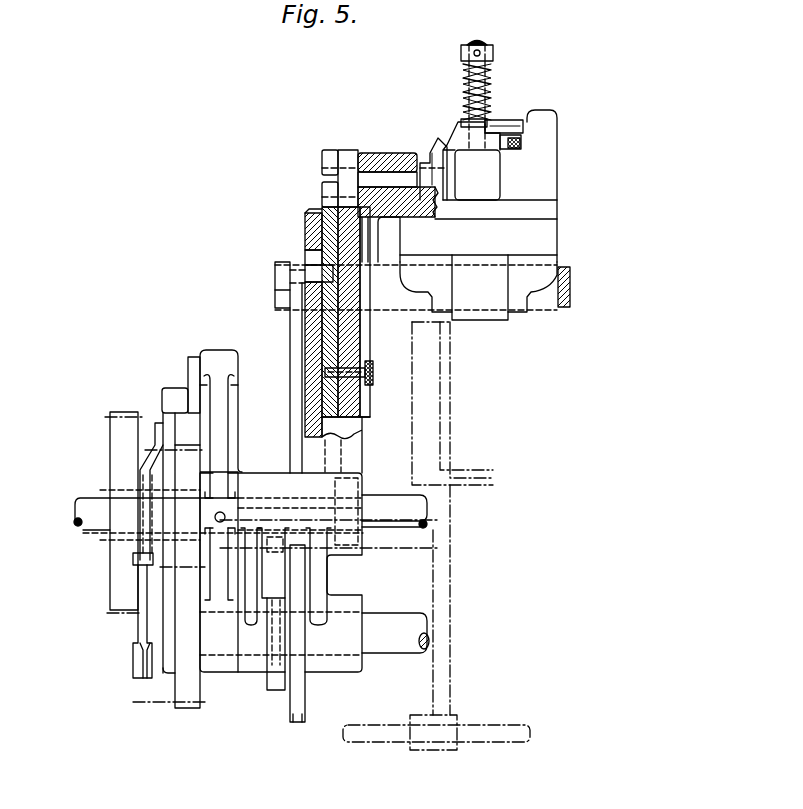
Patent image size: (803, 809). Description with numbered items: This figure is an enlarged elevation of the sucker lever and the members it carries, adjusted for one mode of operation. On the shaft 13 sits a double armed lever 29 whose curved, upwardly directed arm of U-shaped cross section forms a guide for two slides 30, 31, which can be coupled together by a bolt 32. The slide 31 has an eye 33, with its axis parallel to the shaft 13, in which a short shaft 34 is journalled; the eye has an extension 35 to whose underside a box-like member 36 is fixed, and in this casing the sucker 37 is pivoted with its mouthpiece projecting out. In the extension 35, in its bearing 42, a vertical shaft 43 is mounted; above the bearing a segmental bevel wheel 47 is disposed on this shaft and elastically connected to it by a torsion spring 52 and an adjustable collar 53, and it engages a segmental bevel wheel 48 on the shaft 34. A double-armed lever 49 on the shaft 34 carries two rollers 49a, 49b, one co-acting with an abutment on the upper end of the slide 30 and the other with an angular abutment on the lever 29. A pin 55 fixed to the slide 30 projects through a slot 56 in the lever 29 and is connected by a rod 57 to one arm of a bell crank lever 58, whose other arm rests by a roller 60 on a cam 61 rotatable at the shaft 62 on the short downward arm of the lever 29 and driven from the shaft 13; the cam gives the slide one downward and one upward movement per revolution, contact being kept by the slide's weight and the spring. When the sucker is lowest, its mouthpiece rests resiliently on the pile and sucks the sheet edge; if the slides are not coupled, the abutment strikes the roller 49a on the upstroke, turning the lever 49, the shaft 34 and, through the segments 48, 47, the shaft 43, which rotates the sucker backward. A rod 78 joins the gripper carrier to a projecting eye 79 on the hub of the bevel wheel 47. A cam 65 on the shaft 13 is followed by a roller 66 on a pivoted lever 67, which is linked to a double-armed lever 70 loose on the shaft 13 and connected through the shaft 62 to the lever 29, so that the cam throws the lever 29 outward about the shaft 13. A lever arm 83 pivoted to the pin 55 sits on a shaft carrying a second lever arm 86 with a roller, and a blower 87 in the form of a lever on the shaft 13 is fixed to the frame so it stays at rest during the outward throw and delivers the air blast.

The shaft 13 is at (90, 527).
The double armed lever 29 is at (310, 352).
The slide 30 is at (342, 345).
The slide 31 is at (368, 416).
The bolt 32 is at (363, 378).
The eye 33 is at (391, 154).
The short shaft 34 is at (356, 157).
The extension 35 is at (546, 205).
The box-like member 36 is at (546, 241).
The sucker 37 is at (484, 302).
The bearing 42 is at (483, 184).
The vertical shaft 43 is at (472, 106).
The segmental bevel wheel 47 is at (456, 128).
The segmental bevel wheel 48 is at (432, 150).
The double-armed lever 49 is at (348, 160).
The roller 49a is at (330, 198).
The roller 49b is at (330, 167).
The torsion spring 52 is at (465, 82).
The adjustable collar 53 is at (490, 47).
The pin 55 is at (307, 276).
The slot 56 is at (315, 258).
The rod 57 is at (298, 418).
The bell crank lever 58 is at (275, 692).
The roller 60 is at (306, 695).
The cam 61 is at (302, 721).
The shaft 62 is at (427, 615).
The cam 65 is at (156, 428).
The roller 66 is at (160, 567).
The pivoted lever 67 is at (140, 673).
The double-armed lever 70 is at (230, 678).
The rod 78 is at (521, 142).
The projecting eye 79 is at (536, 116).
The lever arm 83 is at (283, 282).
The lever arm 86 is at (570, 302).
The blower 87 is at (442, 407).